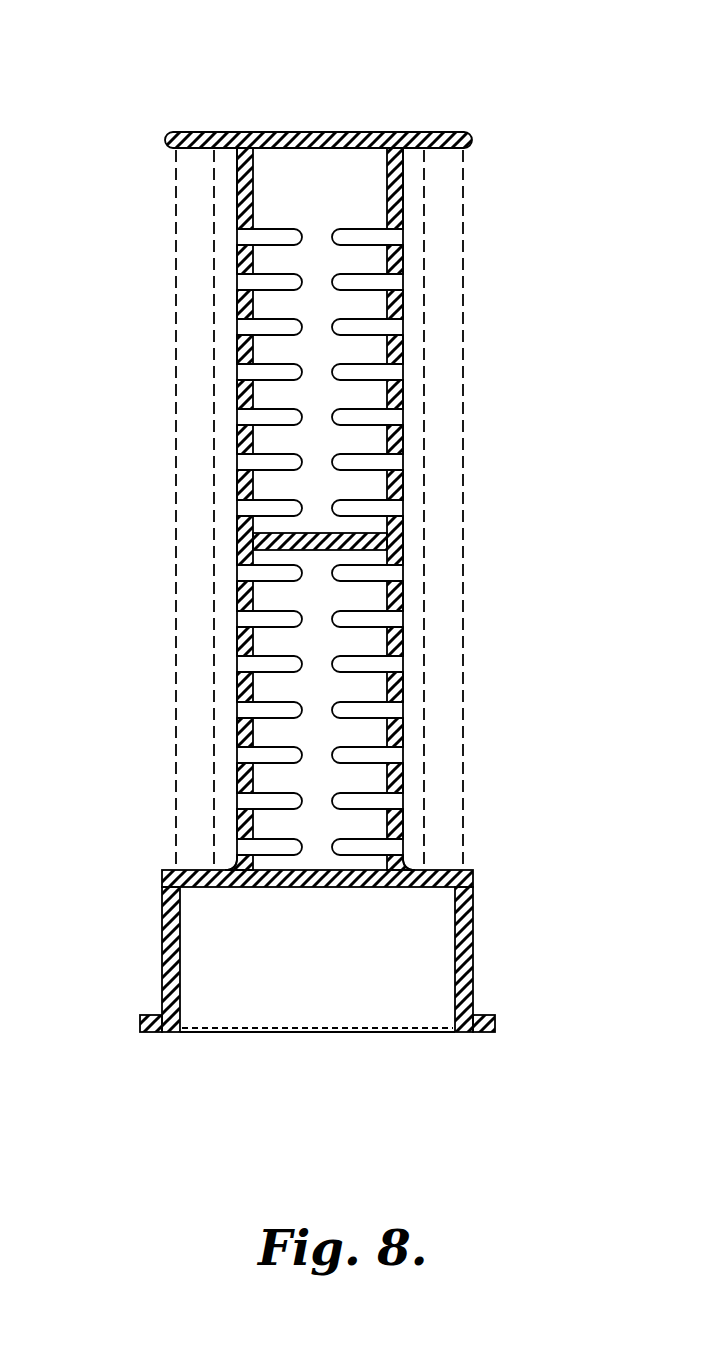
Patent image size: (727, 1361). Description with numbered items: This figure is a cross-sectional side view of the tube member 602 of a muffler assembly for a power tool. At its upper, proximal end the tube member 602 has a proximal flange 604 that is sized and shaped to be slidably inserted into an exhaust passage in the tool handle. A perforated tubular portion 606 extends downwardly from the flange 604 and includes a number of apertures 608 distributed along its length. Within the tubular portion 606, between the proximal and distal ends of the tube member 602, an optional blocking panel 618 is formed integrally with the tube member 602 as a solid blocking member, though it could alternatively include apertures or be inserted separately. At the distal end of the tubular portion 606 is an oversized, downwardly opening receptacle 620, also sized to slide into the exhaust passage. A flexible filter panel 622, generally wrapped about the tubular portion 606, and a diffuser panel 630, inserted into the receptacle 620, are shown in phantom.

The tube member 602 is at (200, 108).
The proximal flange 604 is at (447, 132).
The perforated tubular portion 606 is at (398, 388).
The apertures 608 is at (243, 317).
The blocking panel 618 is at (322, 548).
The receptacle 620 is at (473, 945).
The filter panel 622 is at (458, 192).
The diffuser panel 630 is at (315, 998).